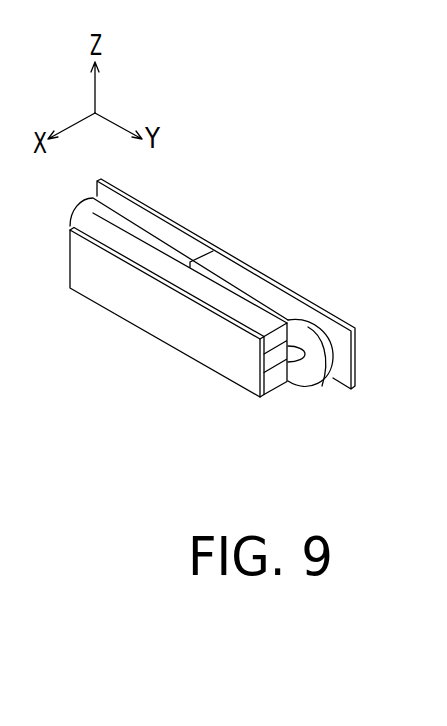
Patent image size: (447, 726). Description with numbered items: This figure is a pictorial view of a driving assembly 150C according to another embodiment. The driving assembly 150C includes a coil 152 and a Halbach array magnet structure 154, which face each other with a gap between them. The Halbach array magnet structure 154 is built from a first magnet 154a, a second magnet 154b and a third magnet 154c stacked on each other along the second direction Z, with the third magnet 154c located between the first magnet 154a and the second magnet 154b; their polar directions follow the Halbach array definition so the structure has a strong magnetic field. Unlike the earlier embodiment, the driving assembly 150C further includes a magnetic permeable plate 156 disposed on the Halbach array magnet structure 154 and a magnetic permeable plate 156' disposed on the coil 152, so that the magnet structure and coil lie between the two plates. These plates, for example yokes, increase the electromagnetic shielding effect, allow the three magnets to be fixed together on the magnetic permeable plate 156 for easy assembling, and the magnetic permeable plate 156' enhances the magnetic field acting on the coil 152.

The driving assembly 150C is at (252, 328).
The coil 152 is at (247, 321).
The Halbach array magnet structure 154 is at (333, 354).
The first magnet 154a is at (296, 346).
The second magnet 154b is at (333, 325).
The third magnet 154c is at (303, 355).
The magnetic permeable plate 156 is at (178, 319).
The magnetic permeable plate 156' is at (261, 284).